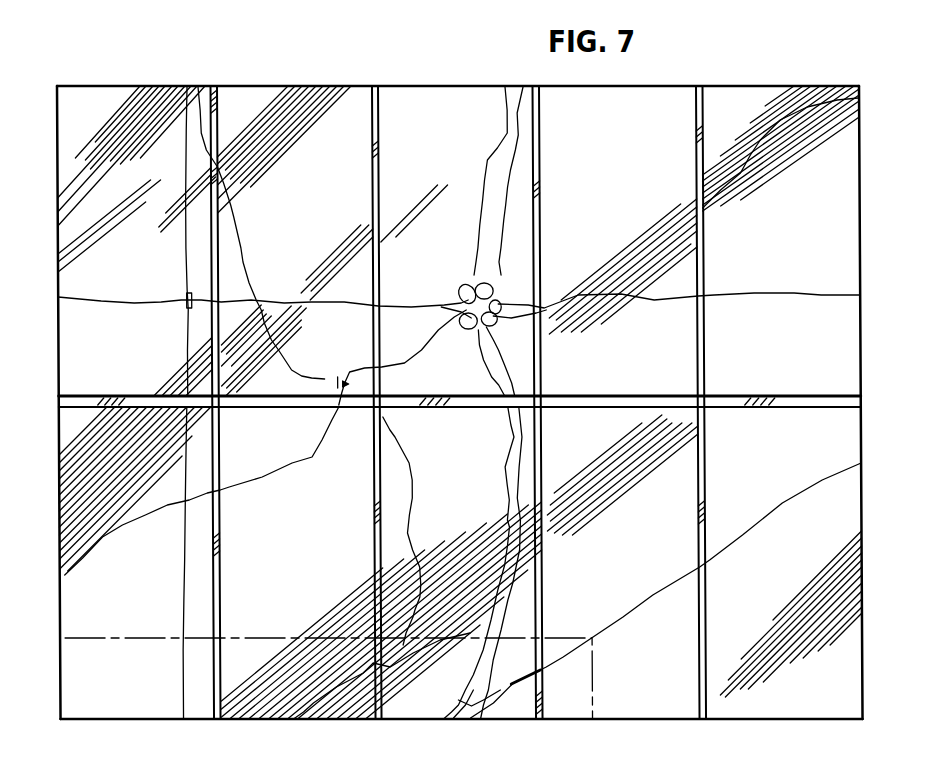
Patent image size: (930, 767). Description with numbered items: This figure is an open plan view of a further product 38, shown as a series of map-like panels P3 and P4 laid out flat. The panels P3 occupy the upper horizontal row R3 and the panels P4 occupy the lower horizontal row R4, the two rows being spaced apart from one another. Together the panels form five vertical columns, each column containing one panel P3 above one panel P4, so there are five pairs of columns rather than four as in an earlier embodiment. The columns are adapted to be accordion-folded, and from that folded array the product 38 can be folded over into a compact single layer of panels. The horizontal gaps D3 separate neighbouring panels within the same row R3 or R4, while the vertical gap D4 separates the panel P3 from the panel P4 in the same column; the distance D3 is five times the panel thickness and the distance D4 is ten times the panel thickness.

The product 38 is at (115, 81).
The distance between panels in the same row D3 is at (217, 87).
The distance between panels in the same column D4 is at (60, 403).
The horizontal row R3 is at (57, 237).
The horizontal row R4 is at (57, 576).
The panel P3 is at (143, 280).
The panel P4 is at (146, 593).